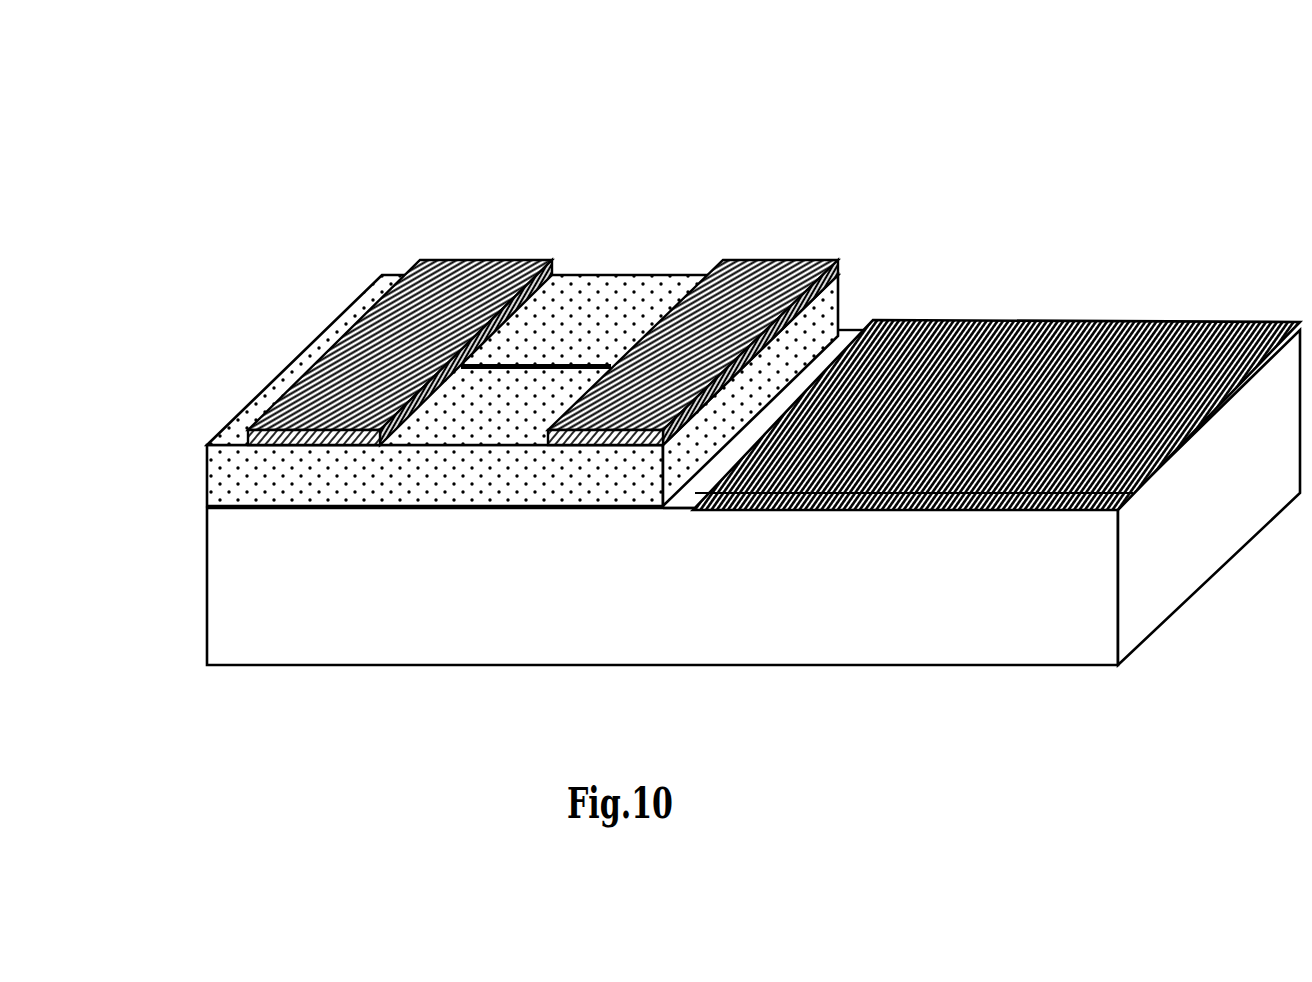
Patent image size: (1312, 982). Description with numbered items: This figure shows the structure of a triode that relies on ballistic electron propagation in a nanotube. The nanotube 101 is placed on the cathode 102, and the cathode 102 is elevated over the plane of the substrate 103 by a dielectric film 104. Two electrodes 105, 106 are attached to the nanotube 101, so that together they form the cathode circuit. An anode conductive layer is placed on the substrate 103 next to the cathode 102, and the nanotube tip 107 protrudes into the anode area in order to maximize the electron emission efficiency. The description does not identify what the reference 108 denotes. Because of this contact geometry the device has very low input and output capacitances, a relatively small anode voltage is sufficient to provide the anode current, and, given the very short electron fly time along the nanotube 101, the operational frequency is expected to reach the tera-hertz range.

The nanotube 101 is at (535, 357).
The cathode 102 is at (442, 287).
The substrate 103 is at (558, 588).
The dielectric film 104 is at (247, 482).
The electrode 105 is at (340, 322).
The electrode 106 is at (737, 283).
The nanotube tip 107 is at (1042, 320).
The gap 108 is at (818, 322).